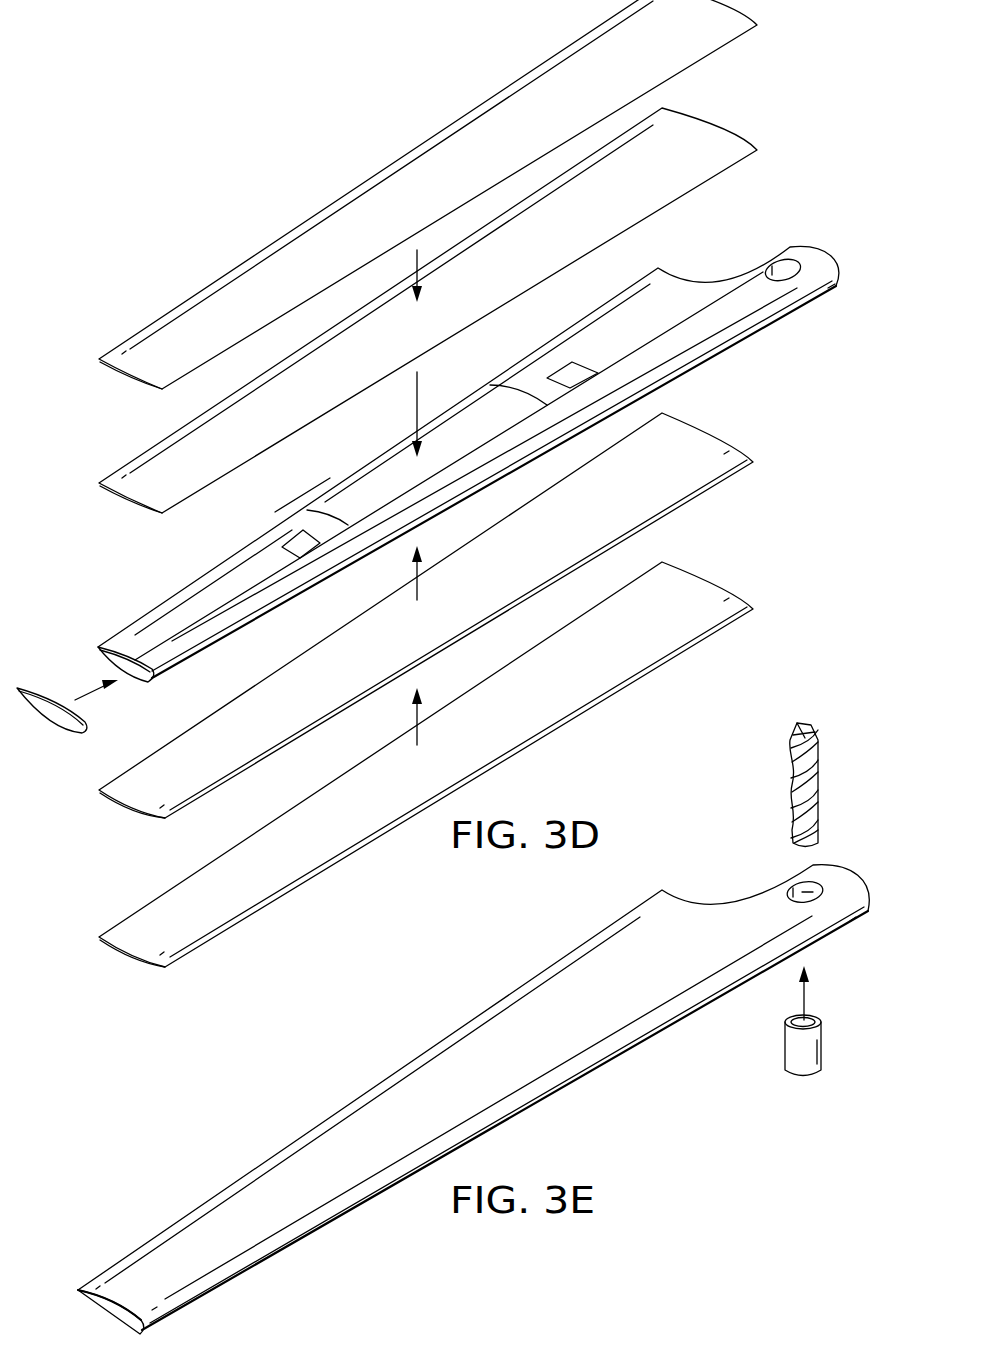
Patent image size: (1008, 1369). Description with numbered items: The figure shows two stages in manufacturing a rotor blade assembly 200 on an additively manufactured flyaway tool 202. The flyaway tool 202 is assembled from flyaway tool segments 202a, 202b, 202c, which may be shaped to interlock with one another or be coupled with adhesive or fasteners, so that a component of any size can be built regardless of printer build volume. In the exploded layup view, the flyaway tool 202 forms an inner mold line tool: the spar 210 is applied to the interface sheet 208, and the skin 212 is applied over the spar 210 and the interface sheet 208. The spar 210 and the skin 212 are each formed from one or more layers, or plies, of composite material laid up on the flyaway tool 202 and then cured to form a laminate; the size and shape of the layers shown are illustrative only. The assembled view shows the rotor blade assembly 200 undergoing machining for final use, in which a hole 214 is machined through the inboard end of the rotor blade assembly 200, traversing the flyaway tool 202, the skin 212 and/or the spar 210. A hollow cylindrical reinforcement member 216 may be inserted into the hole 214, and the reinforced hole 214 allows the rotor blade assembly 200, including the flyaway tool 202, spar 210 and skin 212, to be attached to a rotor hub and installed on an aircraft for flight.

In FIG. 3E, the rotor blade assembly 200 is at (493, 1028).
In FIG. 3D, the flyaway tool 202 is at (440, 489).
In FIG. 3D, the flyaway tool segment 202a is at (183, 612).
In FIG. 3D, the flyaway tool segment 202b is at (375, 480).
In FIG. 3D, the flyaway tool segment 202c is at (667, 312).
In FIG. 3D, the interface sheet 208 is at (133, 642).
In FIG. 3D, the spar 210 is at (773, 313).
In FIG. 3D, the skin 212 is at (100, 393).
In FIG. 3E, the skin 212 is at (468, 1052).
In FIG. 3E, the hole 214 is at (823, 890).
In FIG. 3E, the hollow cylindrical reinforcement member 216 is at (823, 1047).